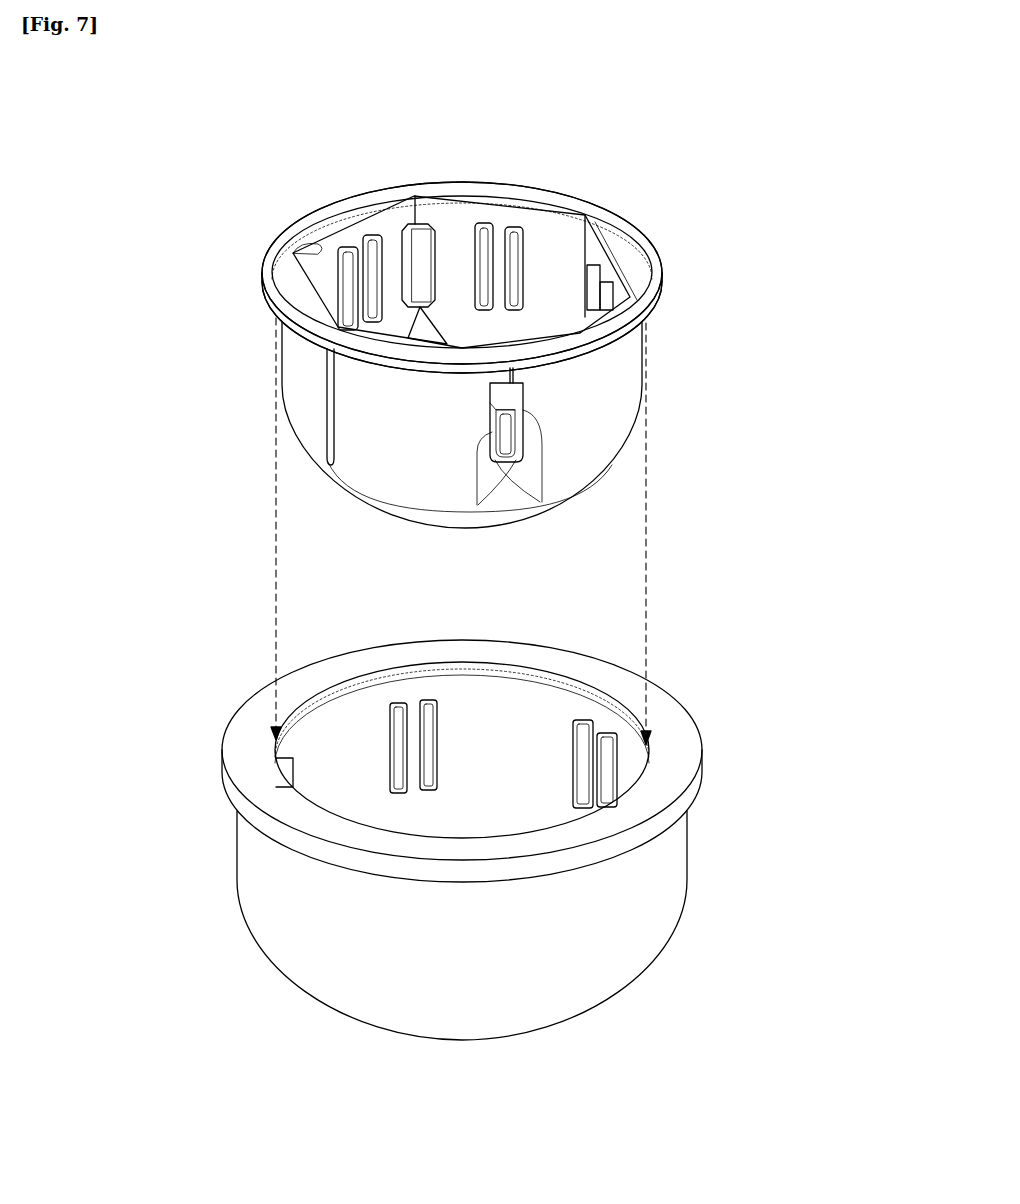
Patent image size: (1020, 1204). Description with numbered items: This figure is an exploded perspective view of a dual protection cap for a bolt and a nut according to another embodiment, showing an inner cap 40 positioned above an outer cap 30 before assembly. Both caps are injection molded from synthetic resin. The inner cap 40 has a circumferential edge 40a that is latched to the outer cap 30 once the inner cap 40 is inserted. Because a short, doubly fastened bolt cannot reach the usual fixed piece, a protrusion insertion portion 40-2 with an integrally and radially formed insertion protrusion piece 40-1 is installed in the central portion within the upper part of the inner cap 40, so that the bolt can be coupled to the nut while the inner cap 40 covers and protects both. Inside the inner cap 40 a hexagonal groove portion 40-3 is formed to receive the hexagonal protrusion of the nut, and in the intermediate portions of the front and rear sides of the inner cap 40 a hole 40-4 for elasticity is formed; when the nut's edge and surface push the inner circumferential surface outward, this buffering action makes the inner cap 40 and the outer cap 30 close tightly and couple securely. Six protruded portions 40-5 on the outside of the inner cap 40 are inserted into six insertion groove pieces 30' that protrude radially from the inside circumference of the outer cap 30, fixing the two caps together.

The outer cap 30 is at (524, 840).
The insertion groove piece 30' is at (476, 707).
The inner cap 40 is at (668, 366).
The circumferential edge 40a is at (662, 289).
The insertion protrusion piece 40-1 is at (483, 465).
The protrusion insertion portion 40-2 is at (523, 408).
The hexagonal groove portion 40-3 is at (318, 247).
The hole for elasticity 40-4 is at (452, 243).
The protruded portion 40-5 is at (328, 405).